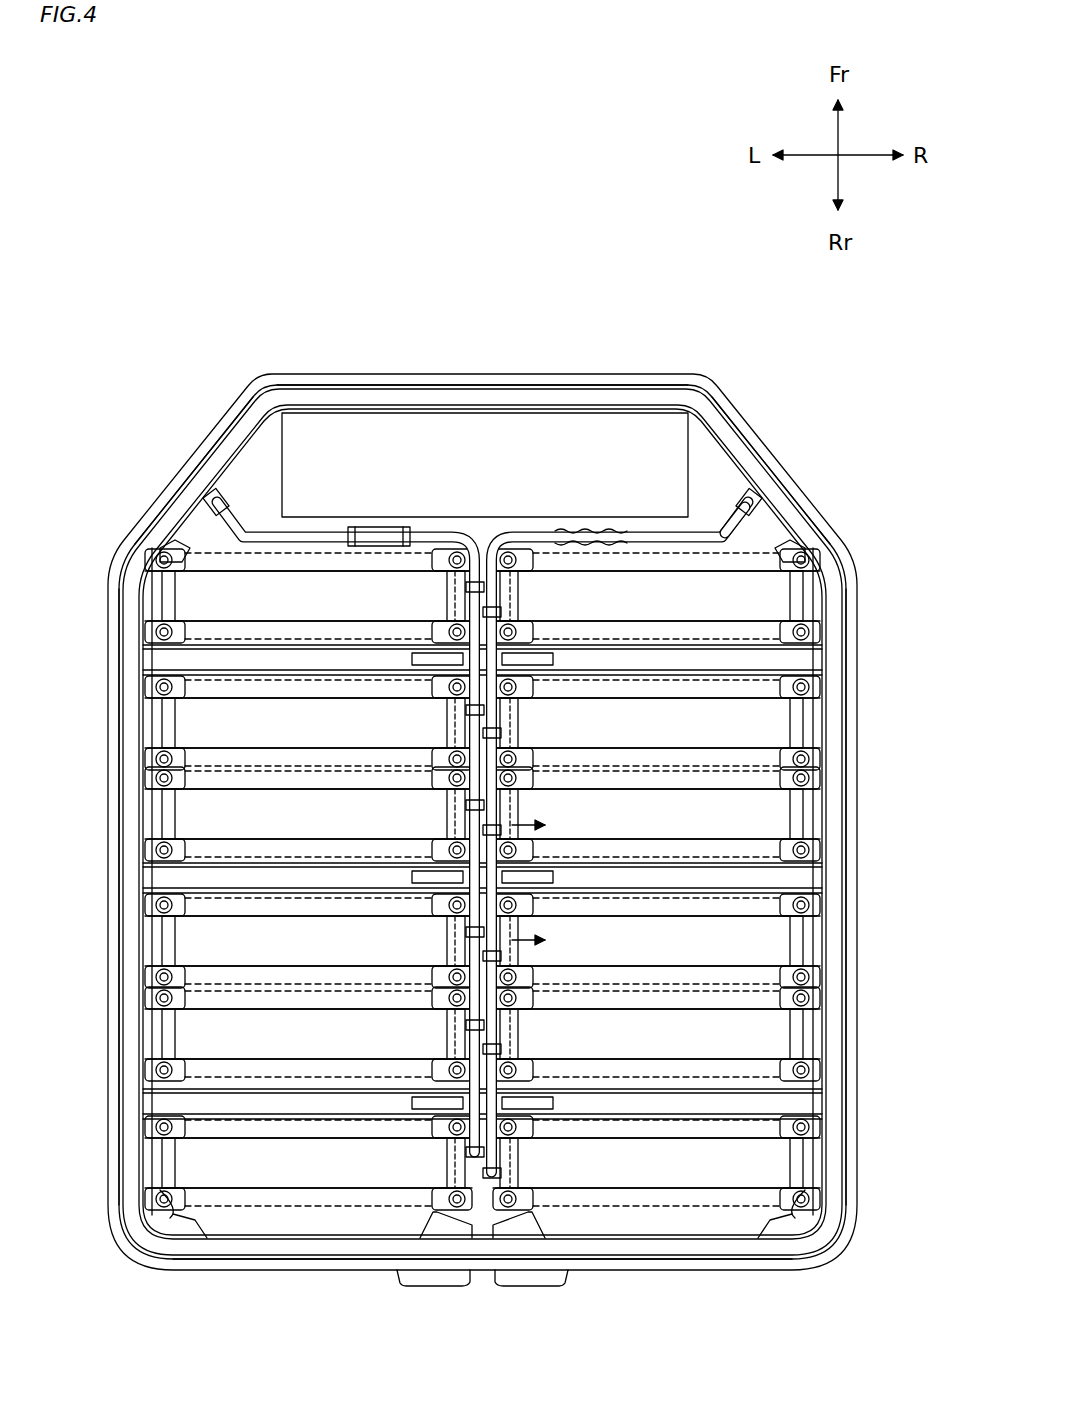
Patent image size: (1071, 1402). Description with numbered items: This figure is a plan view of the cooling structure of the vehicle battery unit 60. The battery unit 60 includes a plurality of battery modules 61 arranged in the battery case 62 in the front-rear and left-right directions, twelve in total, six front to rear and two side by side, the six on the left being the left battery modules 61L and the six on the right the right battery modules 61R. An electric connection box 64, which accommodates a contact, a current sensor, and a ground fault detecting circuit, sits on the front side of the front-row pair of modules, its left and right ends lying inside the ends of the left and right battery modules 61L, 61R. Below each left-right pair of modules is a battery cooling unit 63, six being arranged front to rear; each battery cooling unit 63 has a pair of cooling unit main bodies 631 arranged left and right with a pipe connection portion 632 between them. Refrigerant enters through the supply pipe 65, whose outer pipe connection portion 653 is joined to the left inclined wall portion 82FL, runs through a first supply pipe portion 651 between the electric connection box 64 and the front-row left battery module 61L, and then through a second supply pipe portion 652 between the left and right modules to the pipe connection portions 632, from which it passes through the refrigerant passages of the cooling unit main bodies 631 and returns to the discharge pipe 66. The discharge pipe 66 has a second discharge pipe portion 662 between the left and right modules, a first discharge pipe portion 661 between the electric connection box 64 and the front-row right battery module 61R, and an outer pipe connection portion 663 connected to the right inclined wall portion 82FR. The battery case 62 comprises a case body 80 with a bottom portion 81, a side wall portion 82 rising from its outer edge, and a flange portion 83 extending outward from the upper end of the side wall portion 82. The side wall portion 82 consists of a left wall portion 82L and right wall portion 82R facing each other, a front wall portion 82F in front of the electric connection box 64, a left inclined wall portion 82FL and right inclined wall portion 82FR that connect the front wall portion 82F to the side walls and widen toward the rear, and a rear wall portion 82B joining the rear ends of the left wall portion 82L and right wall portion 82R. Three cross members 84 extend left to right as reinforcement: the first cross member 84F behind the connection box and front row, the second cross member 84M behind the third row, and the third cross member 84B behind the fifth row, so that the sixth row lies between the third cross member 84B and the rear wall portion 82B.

The battery unit 60 is at (880, 578).
The battery module 61 is at (486, 830).
The left battery module 61L is at (195, 512).
The right battery module 61R is at (780, 598).
The battery case 62 is at (862, 768).
The case body 80 is at (529, 822).
The battery cooling unit 63 is at (202, 598).
The electric connection box 64 is at (508, 440).
The supply pipe 65 is at (425, 516).
The first supply pipe portion 651 is at (330, 526).
The second supply pipe portion 652 is at (440, 1043).
The outer pipe connection portion 653 is at (222, 490).
The discharge pipe 66 is at (562, 520).
The first discharge pipe portion 661 is at (730, 470).
The second discharge pipe portion 662 is at (480, 1043).
The outer pipe connection portion 663 is at (747, 490).
The bottom portion 81 is at (740, 548).
The side wall portion 82 is at (317, 1213).
The front wall portion 82F is at (633, 418).
The left inclined wall portion 82FL is at (247, 458).
The right inclined wall portion 82FR is at (722, 460).
The left wall portion 82L is at (147, 830).
The right wall portion 82R is at (826, 868).
The rear wall portion 82B is at (677, 1227).
The flange portion 83 is at (212, 540).
The cross member 84 is at (537, 900).
The first cross member 84F is at (808, 662).
The second cross member 84M is at (808, 878).
The third cross member 84B is at (808, 1098).
The cooling unit main body 631 is at (240, 1168).
The pipe connection portion 632 is at (470, 1178).